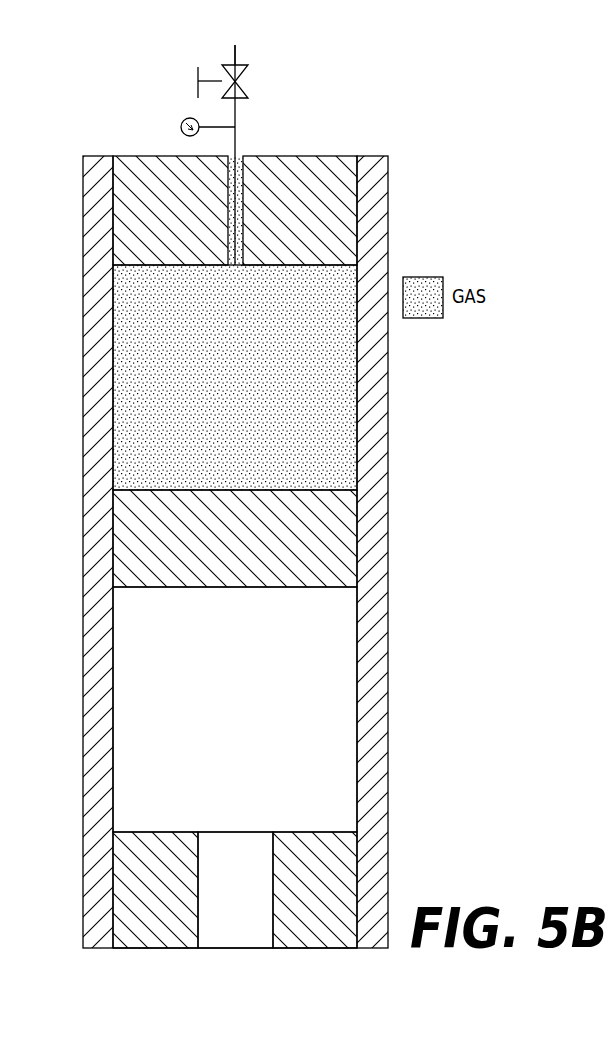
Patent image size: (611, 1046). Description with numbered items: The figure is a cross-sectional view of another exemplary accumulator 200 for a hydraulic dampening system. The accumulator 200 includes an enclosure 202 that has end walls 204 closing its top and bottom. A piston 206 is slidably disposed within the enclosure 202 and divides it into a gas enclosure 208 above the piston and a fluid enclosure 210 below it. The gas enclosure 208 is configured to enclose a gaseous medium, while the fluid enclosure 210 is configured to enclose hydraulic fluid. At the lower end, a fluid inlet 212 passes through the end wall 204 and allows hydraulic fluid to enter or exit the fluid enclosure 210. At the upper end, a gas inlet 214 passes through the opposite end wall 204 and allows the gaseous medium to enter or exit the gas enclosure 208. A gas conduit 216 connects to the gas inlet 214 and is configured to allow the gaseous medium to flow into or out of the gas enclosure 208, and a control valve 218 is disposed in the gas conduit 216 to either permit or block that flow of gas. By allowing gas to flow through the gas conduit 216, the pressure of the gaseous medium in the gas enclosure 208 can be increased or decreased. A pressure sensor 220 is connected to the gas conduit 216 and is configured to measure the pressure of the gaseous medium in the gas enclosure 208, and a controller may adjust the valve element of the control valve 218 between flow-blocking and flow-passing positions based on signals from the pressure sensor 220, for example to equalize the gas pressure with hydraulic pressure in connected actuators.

The accumulator 200 is at (458, 432).
The enclosure 202 is at (382, 568).
The end walls 204 is at (342, 205).
The piston 206 is at (253, 550).
The gas enclosure 208 is at (253, 393).
The fluid enclosure 210 is at (253, 730).
The fluid inlet 212 is at (237, 928).
The gas inlet 214 is at (242, 157).
The gas conduit 216 is at (236, 49).
The control valve 218 is at (249, 90).
The pressure sensor 220 is at (180, 127).